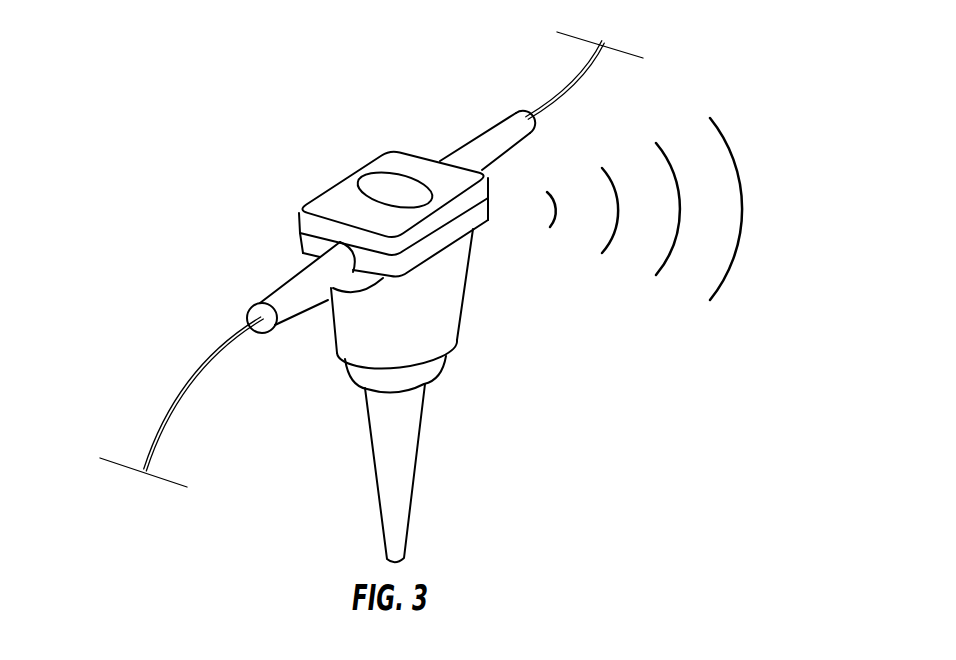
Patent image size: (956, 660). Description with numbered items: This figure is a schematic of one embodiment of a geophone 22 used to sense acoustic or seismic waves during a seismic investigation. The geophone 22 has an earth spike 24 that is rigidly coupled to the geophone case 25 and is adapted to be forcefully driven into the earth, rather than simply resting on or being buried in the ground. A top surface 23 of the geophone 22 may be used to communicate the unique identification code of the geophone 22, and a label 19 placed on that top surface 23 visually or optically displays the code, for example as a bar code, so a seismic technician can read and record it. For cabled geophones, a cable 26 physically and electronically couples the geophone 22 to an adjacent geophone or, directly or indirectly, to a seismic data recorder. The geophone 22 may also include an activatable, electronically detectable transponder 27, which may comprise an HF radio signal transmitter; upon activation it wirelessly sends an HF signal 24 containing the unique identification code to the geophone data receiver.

The label 19 is at (390, 160).
The geophone 22 is at (258, 202).
The top surface 23 is at (395, 190).
The earth spike 24 is at (392, 463).
The geophone case 25 is at (438, 308).
The cable 26 is at (197, 373).
The transponder 27 is at (450, 242).